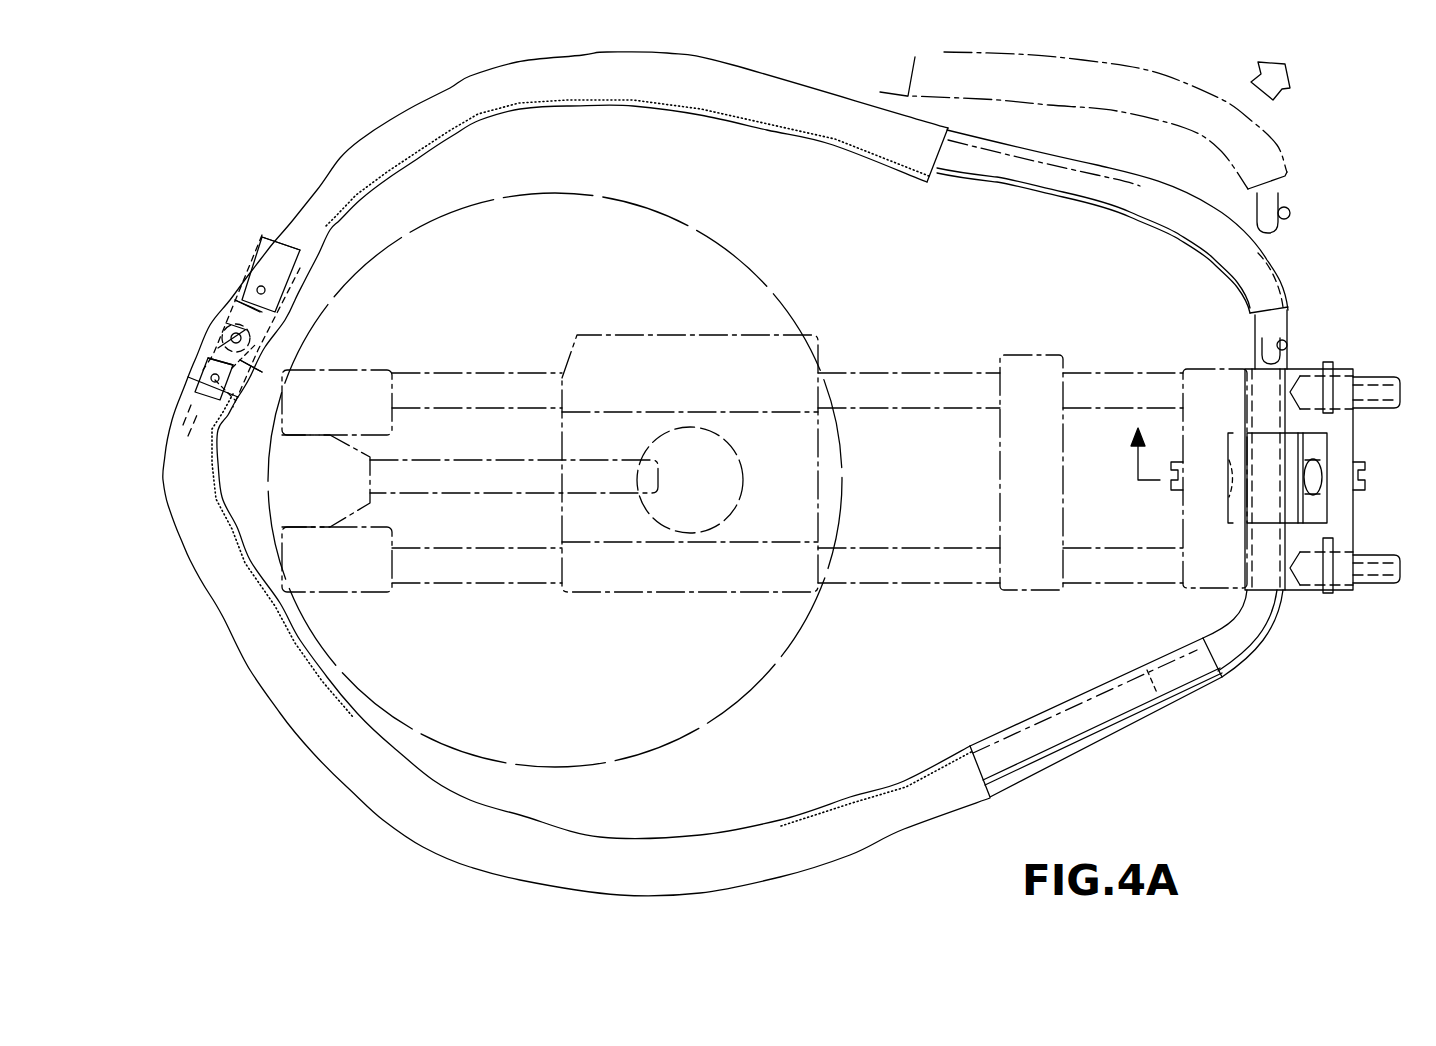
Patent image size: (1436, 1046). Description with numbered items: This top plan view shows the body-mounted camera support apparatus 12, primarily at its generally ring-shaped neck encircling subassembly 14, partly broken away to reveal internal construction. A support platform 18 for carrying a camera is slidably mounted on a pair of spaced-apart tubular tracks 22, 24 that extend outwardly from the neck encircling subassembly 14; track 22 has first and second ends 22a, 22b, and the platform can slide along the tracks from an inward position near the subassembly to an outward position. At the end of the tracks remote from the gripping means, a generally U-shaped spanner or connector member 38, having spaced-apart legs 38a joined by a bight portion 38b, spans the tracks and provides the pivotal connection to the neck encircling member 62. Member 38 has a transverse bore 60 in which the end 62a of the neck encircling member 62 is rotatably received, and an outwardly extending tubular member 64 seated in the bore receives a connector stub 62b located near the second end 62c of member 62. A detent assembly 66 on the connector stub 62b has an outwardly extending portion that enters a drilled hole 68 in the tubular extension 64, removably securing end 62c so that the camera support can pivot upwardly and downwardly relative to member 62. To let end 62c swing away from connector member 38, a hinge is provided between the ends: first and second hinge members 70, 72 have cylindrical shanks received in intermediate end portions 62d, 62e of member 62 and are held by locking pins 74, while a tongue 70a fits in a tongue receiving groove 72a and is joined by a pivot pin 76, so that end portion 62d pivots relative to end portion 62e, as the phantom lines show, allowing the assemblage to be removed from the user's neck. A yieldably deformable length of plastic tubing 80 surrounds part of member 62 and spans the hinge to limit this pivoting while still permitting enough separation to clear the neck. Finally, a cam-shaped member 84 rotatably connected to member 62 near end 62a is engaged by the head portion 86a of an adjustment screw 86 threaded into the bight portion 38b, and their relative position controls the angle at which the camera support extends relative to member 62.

The body-mounted camera support apparatus 12 is at (1305, 684).
The neck encircling subassembly 14 is at (376, 833).
The support platform 18 is at (670, 593).
The tubular-shaped track 22 is at (897, 583).
The first end of track 22a is at (1380, 376).
The second end of track 22b is at (1380, 590).
The tubular-shaped track 24 is at (900, 372).
The spanner member 38 is at (1331, 596).
The legs 38a is at (1185, 392).
The bight portion 38b is at (1352, 532).
The transverse bore 60 is at (1275, 622).
The neck encircling member 62 is at (342, 150).
The end of neck encircling member 62a is at (1265, 550).
The connector stub 62b is at (1290, 222).
The second end of neck encircling member 62c is at (1277, 153).
The intermediate end portion 62d is at (265, 272).
The intermediate end portion 62e is at (212, 365).
The tubular member 64 is at (1255, 353).
The detent assembly 66 is at (1290, 208).
The drilled hole 68 is at (1283, 338).
The first hinge member 70 is at (285, 311).
The tongue 70a is at (283, 372).
The second hinge member 72 is at (232, 368).
The tongue receiving groove 72a is at (218, 348).
The locking pins 74 is at (265, 289).
The pivot pin 76 is at (242, 338).
The yieldably deformable tubular member 80 is at (606, 90).
The cam-shaped member 84 is at (1262, 455).
The adjustment screw 86 is at (1365, 468).
The head portion 86a is at (1315, 477).